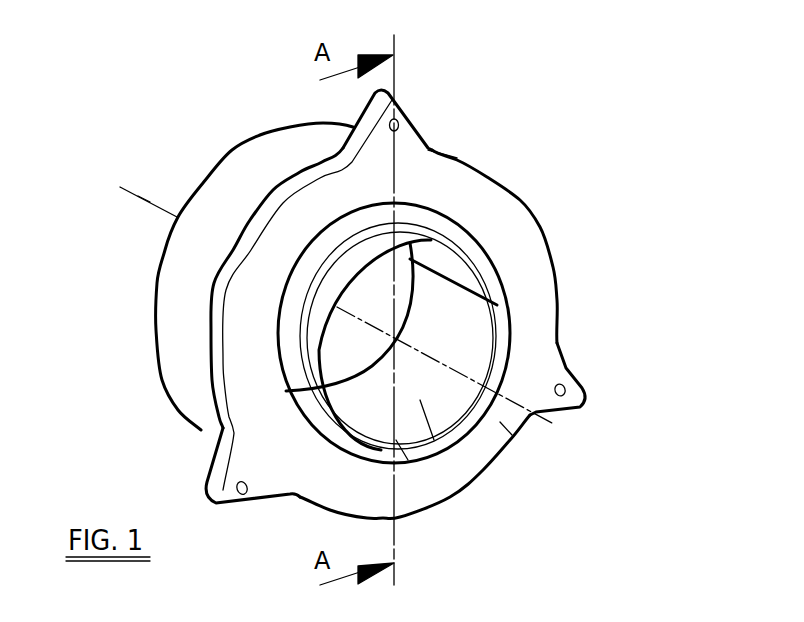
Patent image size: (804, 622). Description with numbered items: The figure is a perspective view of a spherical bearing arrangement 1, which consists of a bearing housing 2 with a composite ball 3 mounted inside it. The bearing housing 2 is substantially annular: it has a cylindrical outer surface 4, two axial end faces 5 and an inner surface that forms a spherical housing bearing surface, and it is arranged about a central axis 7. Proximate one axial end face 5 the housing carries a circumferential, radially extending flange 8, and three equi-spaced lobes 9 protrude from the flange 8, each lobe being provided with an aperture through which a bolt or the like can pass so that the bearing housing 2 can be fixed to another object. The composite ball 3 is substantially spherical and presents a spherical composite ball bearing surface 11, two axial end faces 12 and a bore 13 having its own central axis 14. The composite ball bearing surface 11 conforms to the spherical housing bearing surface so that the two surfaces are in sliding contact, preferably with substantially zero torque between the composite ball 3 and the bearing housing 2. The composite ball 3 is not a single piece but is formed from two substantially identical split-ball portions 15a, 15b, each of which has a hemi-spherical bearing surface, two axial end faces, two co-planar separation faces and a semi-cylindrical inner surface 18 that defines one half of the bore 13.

The spherical bearing arrangement 1 is at (565, 90).
The bearing housing 2 is at (516, 205).
The composite ball 3 is at (509, 318).
The cylindrical outer surface 4 is at (290, 138).
The axial end faces 5 is at (207, 175).
The central axis 7 is at (122, 187).
The flange 8 is at (472, 170).
The lobes 9 is at (398, 112).
The composite ball bearing surface 11 is at (302, 312).
The axial end faces 12 is at (513, 348).
The bore 13 is at (426, 418).
The central axis 14 is at (140, 197).
The split-ball portion 15a is at (490, 274).
The split-ball portion 15b is at (510, 433).
The semi-cylindrical inner surface 18 is at (402, 433).